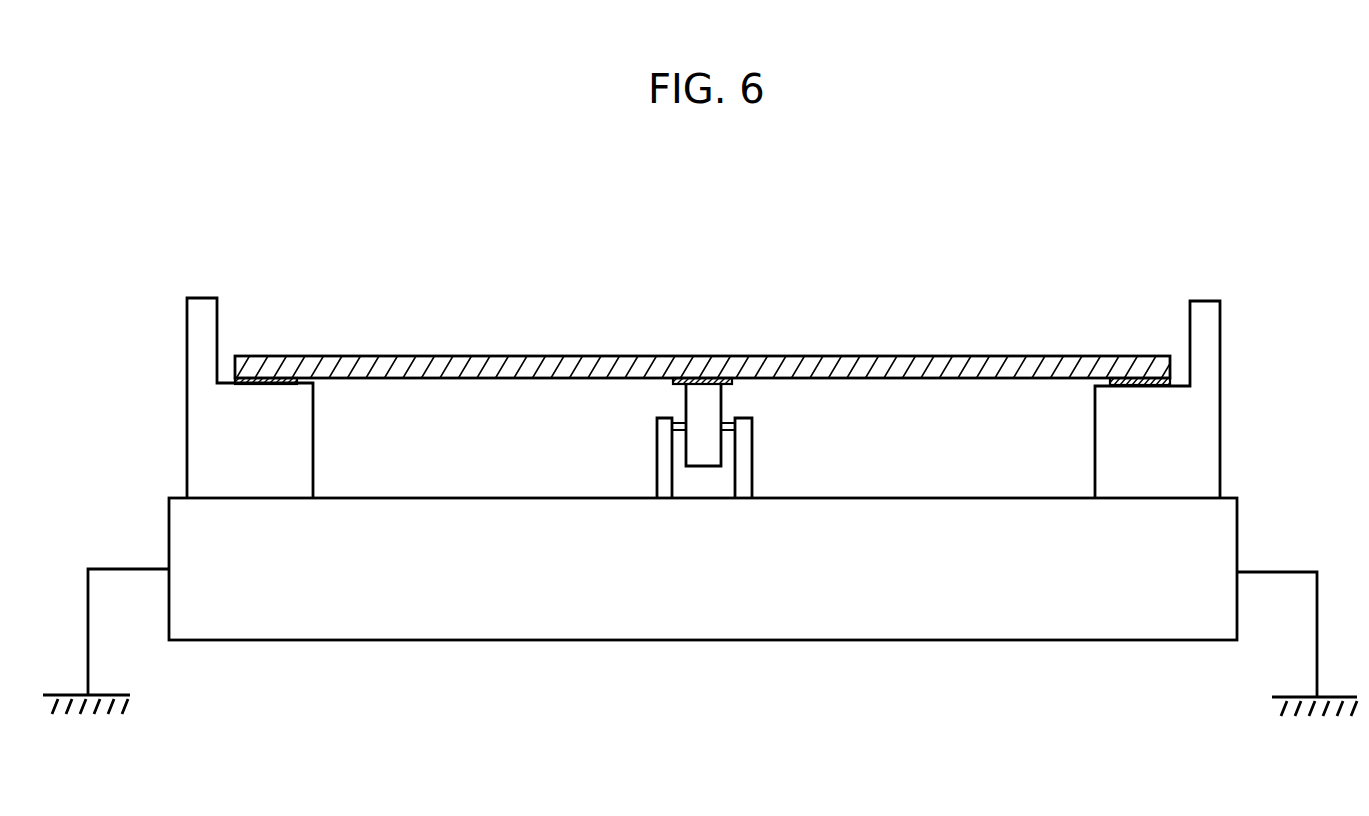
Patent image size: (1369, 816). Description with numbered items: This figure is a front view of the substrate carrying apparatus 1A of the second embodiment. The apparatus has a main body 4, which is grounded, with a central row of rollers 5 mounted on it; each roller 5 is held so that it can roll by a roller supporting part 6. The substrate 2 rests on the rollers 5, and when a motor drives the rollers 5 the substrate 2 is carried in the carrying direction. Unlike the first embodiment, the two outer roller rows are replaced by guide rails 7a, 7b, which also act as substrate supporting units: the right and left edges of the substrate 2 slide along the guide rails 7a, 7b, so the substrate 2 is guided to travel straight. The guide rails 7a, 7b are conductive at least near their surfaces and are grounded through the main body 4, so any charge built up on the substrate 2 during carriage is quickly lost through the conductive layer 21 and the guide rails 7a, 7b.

The substrate carrying apparatus 1A is at (573, 640).
The substrate 2 is at (872, 368).
The conductive layer 21 is at (265, 356).
The main body 4 is at (798, 600).
The roller 5 is at (705, 448).
The roller supporting part 6 is at (665, 468).
The guide rail 7a is at (222, 416).
The guide rail 7b is at (1187, 428).